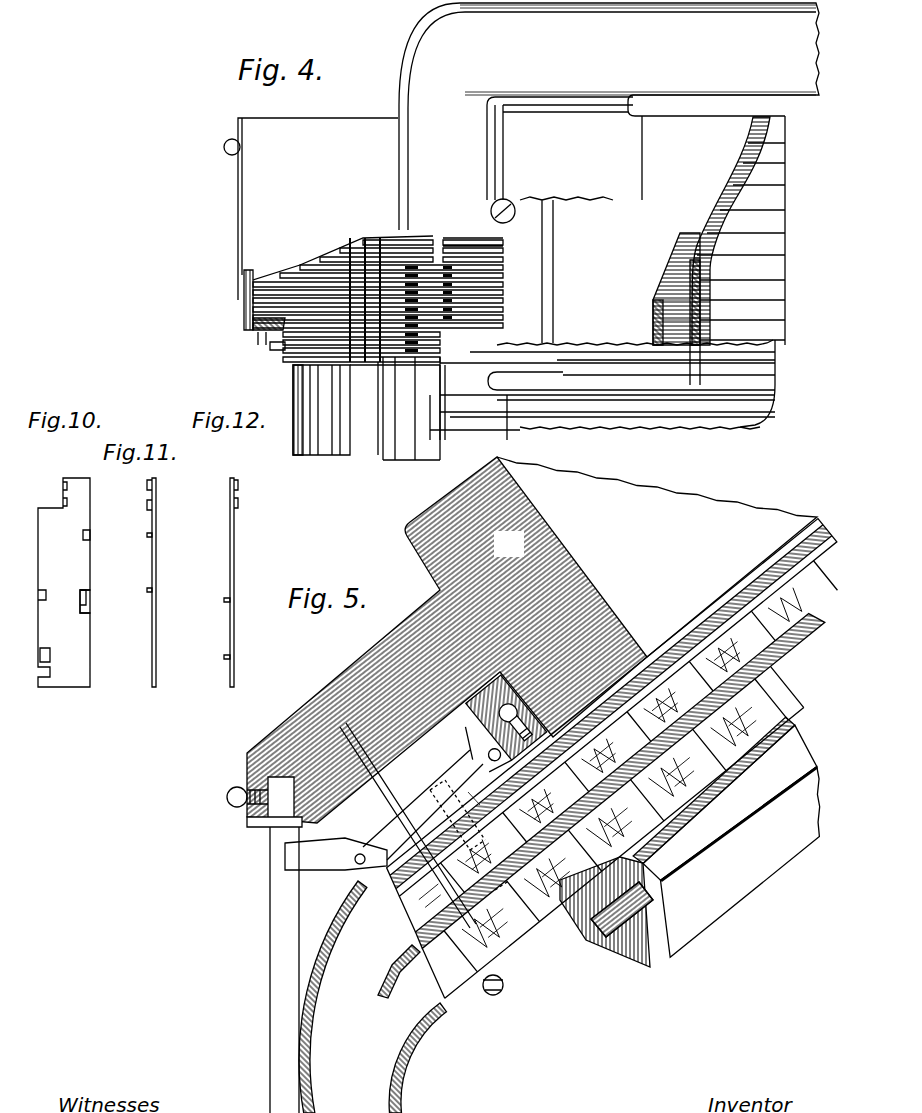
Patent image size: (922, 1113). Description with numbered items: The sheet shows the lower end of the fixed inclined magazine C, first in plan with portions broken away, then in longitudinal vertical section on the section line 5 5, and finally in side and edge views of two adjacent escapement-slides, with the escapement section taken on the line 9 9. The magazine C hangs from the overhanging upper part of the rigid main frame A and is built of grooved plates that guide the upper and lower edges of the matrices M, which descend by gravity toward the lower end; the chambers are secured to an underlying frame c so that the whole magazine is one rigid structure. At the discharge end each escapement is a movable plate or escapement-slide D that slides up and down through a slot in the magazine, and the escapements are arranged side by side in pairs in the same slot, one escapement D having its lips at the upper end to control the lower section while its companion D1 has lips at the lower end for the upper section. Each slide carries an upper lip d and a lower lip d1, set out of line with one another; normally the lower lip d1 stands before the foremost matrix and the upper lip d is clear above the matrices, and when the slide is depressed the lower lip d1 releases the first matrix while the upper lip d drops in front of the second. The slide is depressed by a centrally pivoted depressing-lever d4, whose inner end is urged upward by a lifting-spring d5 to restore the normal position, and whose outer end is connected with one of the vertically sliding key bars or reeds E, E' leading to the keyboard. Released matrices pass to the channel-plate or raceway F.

In FIG. 4, the main frame A is at (609, 116).
In FIG. 5, the main frame A is at (532, 640).
In FIG. 4, the magazine C is at (638, 230).
In FIG. 5, the magazine C is at (620, 734).
In FIG. 5, the underlying frame c is at (680, 896).
In FIG. 4, the escapement-slide D is at (450, 342).
In FIG. 10, the escapement-slide D is at (64, 582).
In FIG. 11, the escapement-slide D is at (152, 560).
In FIG. 5, the escapement-slide D is at (425, 825).
In FIG. 10, the companion escapement D1 is at (84, 598).
In FIG. 12, the companion escapement D1 is at (230, 560).
In FIG. 11, the upper lip d is at (148, 534).
In FIG. 12, the upper lip d is at (226, 602).
In FIG. 5, the upper lip d is at (505, 890).
In FIG. 11, the lower lip d1 is at (148, 592).
In FIG. 12, the lower lip d1 is at (226, 658).
In FIG. 5, the lower lip d1 is at (493, 996).
In FIG. 4, the depressing-lever d4 is at (292, 352).
In FIG. 5, the depressing-lever d4 is at (365, 848).
In FIG. 5, the lifting-spring d5 is at (480, 760).
In FIG. 4, the key-bar E is at (238, 307).
In FIG. 5, the key-bar E is at (264, 945).
In FIG. 4, the end piece E' is at (259, 352).
In FIG. 4, the channel-plate F is at (348, 390).
In FIG. 5, the channel-plate F is at (373, 997).
In FIG. 5, the matrices M is at (629, 780).
In FIG. 4, the section line 5 5 is at (830, 300).
In FIG. 4, the section line 9 9 is at (404, 500).
In FIG. 5, the section line 9 9 is at (588, 1072).